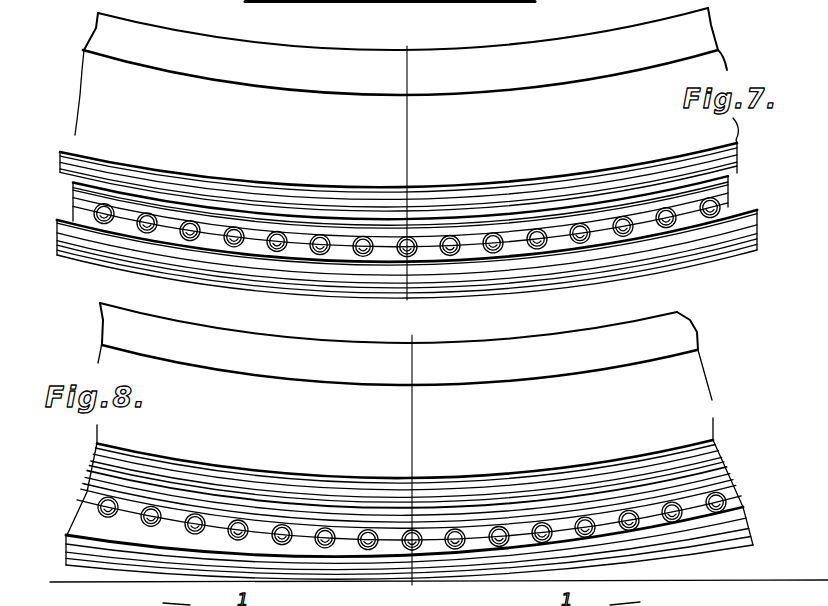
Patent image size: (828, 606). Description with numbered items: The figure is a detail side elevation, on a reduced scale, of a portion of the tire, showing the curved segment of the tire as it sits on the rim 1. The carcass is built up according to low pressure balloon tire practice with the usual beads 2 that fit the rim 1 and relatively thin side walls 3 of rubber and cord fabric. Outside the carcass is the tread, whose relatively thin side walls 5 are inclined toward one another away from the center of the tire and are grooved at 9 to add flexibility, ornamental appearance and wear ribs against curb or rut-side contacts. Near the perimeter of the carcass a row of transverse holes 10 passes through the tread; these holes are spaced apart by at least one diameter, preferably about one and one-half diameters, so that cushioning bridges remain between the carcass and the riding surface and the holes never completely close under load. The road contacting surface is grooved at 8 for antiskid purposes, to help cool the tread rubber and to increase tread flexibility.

In FIG. 7, the rim 1 is at (228, 45).
In FIG. 8, the rim 1 is at (250, 343).
In FIG. 7, the beads 2 is at (394, 164).
In FIG. 8, the beads 2 is at (400, 441).
In FIG. 7, the side walls 3 is at (406, 96).
In FIG. 8, the side walls 3 is at (405, 460).
In FIG. 7, the side walls of the tread 5 is at (280, 176).
In FIG. 8, the side walls of the tread 5 is at (262, 477).
In FIG. 7, the grooves 8 is at (112, 258).
In FIG. 8, the grooves 8 is at (100, 553).
In FIG. 7, the grooves 9 is at (411, 232).
In FIG. 8, the grooves 9 is at (415, 526).
In FIG. 7, the transverse holes 10 is at (360, 202).
In FIG. 8, the transverse holes 10 is at (340, 495).